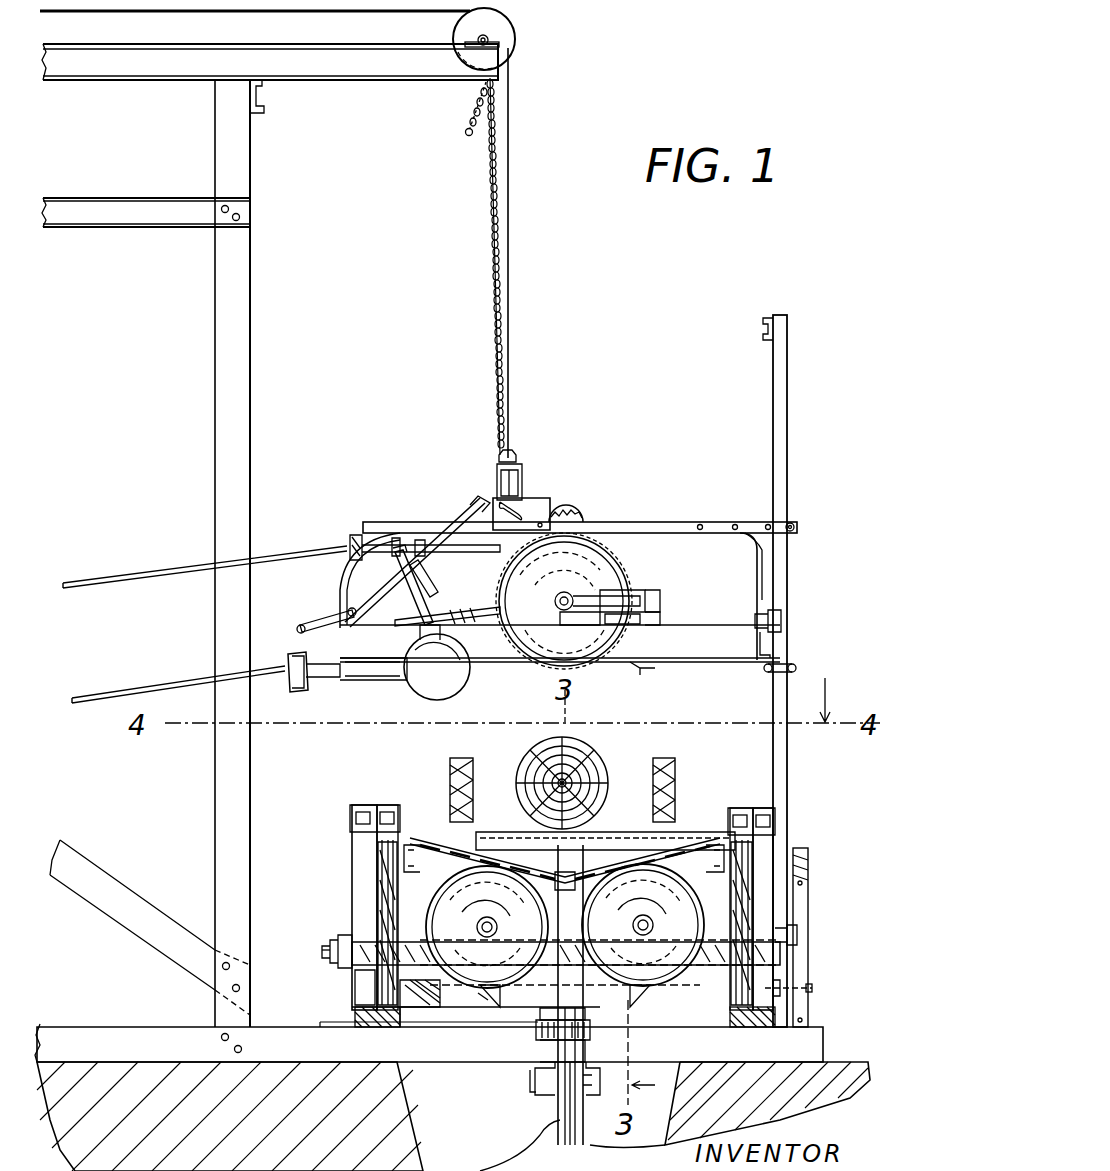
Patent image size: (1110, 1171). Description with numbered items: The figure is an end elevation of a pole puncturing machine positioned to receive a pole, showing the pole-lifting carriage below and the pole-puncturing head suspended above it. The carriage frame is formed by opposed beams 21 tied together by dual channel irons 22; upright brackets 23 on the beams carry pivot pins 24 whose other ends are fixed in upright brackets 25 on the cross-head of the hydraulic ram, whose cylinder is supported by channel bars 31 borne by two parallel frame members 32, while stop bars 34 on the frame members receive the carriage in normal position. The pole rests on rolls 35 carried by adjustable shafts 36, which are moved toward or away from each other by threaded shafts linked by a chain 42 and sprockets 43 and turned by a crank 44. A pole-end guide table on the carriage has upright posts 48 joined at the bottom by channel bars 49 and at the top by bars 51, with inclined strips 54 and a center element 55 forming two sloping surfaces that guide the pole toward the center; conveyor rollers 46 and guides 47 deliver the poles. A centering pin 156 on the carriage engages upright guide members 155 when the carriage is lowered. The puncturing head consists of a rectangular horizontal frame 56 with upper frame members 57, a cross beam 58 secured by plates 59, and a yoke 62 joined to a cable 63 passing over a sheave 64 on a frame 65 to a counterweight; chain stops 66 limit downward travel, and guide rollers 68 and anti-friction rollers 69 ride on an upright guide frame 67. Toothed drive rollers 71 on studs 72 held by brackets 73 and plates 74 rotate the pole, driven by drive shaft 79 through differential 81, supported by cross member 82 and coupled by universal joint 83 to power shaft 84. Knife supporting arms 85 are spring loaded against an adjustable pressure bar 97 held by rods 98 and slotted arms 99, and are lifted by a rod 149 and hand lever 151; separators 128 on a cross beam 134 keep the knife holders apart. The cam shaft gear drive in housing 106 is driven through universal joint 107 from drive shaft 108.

The sheave 64 is at (500, 25).
The frame 65 is at (490, 58).
The cable 63 is at (510, 268).
The adjustable stops 66 is at (494, 298).
The upright guide frame 67 is at (789, 380).
The yoke 62 is at (514, 470).
The cross beam 58 is at (520, 478).
The plates 59 is at (540, 502).
The differential 81 is at (575, 520).
The plates 74 is at (600, 548).
The upper frame members 57 is at (688, 522).
The slotted arms 99 is at (478, 503).
The drive shaft 79 is at (396, 538).
The cross member 82 is at (420, 540).
The universal joint 83 is at (356, 535).
The shaft 84 is at (148, 565).
The rod 149 is at (345, 580).
The pressure bar 97 is at (432, 583).
The hand lever 151 is at (300, 622).
The rods 98 is at (408, 600).
The knife supporting arms 85 is at (470, 600).
The studs 72 is at (555, 601).
The drive rollers 71 is at (625, 598).
The brackets 73 is at (648, 600).
The cross beam 134 is at (668, 617).
The rectangular horizontal frame 56 is at (705, 627).
The anti-friction rollers 69 is at (782, 618).
The guide rollers 68 is at (793, 532).
The separators 128 is at (655, 675).
The drive shaft 108 is at (150, 680).
The universal joint 107 is at (298, 692).
The housing 106 is at (455, 695).
The guides 47 is at (473, 785).
The upright brackets 23 is at (352, 820).
The upright brackets 25 is at (388, 805).
The pivot pins 24 is at (398, 822).
The power driven rollers 46 is at (492, 832).
The strips 54 is at (628, 845).
The belt support 55 is at (548, 868).
The bars 51 is at (420, 858).
The upright posts 48 is at (378, 865).
The tie bars 22 is at (380, 950).
The chain 42 is at (338, 938).
The shafts 36 is at (492, 922).
The sprockets 43 is at (322, 952).
The beams 21 is at (355, 988).
The stop bars 34 is at (355, 1015).
The channel bars 49 is at (435, 990).
The rolls 35 is at (497, 1007).
The frame members 32 is at (460, 1050).
The channel bars 31 is at (535, 1095).
The upright guide members 155 is at (808, 862).
The crank 44 is at (797, 932).
The centering pin 156 is at (812, 988).